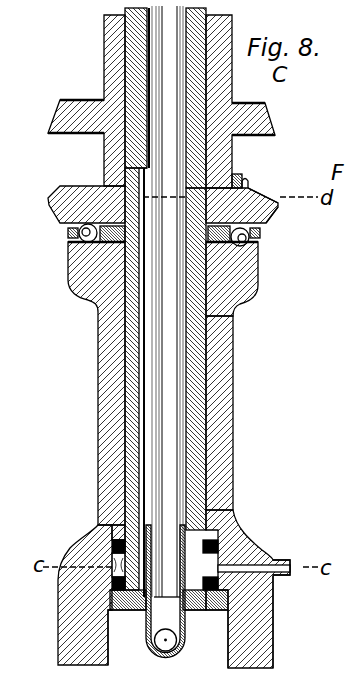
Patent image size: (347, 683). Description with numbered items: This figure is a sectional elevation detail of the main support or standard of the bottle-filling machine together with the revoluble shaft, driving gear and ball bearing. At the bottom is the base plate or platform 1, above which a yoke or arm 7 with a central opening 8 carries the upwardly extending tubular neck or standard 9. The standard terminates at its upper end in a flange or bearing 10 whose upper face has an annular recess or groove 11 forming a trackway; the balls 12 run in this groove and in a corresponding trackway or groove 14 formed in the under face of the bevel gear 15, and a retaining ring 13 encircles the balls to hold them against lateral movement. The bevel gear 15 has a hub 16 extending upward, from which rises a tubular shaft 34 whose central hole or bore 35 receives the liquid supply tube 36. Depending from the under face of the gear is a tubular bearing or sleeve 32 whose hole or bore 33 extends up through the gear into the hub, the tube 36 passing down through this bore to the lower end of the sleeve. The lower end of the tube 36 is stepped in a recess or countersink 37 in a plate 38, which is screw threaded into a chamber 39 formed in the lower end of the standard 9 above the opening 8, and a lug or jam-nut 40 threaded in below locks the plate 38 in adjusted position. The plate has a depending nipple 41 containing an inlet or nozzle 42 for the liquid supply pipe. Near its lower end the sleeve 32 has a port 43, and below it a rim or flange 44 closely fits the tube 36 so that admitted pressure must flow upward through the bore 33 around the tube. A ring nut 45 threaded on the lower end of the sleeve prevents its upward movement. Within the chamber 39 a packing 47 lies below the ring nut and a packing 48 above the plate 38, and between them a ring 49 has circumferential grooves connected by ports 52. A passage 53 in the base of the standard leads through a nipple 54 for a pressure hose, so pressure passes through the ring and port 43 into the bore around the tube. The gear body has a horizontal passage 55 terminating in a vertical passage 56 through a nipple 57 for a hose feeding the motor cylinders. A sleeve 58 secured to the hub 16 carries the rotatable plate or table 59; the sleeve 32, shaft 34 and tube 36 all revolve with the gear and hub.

The base plate or platform 1 is at (80, 203).
The yoke or arm 7 is at (273, 645).
The central opening 8 is at (168, 642).
The tubular neck or standard 9 is at (233, 420).
The flange or bearing 10 is at (254, 277).
The annular recess or groove 11 is at (250, 247).
The balls 12 is at (248, 239).
The retaining ring 13 is at (259, 233).
The trackway or groove 14 is at (270, 194).
The bevel gear 15 is at (274, 215).
The hub 16 is at (135, 63).
The tubular bearing or sleeve 32 is at (200, 375).
The hole or bore 33 is at (145, 367).
The tubular shaft 34 is at (147, 30).
The central hole or bore 35 is at (187, 72).
The tube 36 is at (170, 92).
The recess or countersink 37 is at (188, 608).
The plate 38 is at (203, 608).
The chamber 39 is at (273, 618).
The lug or jam-nut 40 is at (140, 608).
The depending nipple 41 is at (165, 591).
The inlet or nozzle 42 is at (166, 648).
The port 43 is at (213, 513).
The rim or flange 44 is at (117, 600).
The ring nut 45 is at (127, 527).
The packing 47 is at (112, 548).
The packing 48 is at (273, 602).
The ring 49 is at (115, 567).
The ports 52 is at (238, 550).
The passage 53 is at (280, 565).
The nipple 54 is at (290, 560).
The horizontal passage 55 is at (235, 188).
The vertical passage 56 is at (251, 186).
The nipple 57 is at (244, 186).
The sleeve 58 is at (113, 148).
The plate or table 59 is at (95, 88).